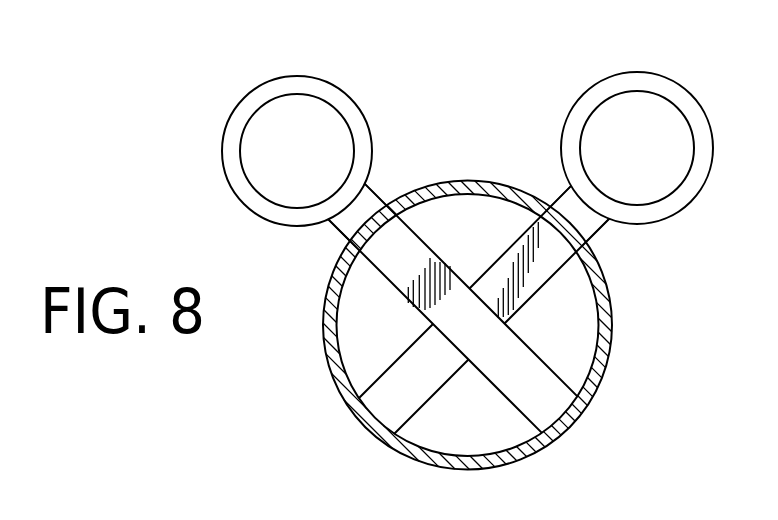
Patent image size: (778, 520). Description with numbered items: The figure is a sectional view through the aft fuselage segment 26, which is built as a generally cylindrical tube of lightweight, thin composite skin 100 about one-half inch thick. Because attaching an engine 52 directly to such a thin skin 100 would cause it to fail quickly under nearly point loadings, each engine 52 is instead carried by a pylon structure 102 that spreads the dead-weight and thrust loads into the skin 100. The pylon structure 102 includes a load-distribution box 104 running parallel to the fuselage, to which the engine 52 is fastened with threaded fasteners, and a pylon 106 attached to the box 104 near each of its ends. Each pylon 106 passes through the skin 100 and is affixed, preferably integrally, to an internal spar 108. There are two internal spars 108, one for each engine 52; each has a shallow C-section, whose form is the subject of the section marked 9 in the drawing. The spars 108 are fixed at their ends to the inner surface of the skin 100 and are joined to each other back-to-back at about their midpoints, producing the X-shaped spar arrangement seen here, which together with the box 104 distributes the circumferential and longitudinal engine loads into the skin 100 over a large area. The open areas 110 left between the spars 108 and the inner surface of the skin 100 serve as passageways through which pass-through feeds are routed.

The aft fuselage segment 26 is at (612, 345).
The engine 52 is at (338, 97).
The skin 100 is at (327, 318).
The pylon structure 102 is at (322, 227).
The load-distribution box 104 is at (600, 225).
The pylon 106 is at (343, 247).
The internal spar 108 is at (501, 257).
The open areas 110 is at (343, 353).
The section line 9- 9 is at (551, 365).